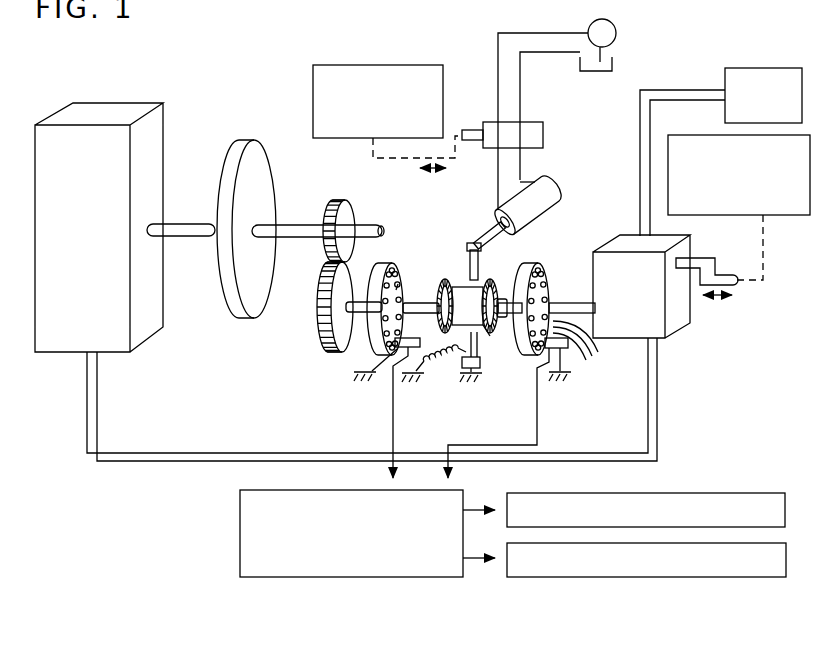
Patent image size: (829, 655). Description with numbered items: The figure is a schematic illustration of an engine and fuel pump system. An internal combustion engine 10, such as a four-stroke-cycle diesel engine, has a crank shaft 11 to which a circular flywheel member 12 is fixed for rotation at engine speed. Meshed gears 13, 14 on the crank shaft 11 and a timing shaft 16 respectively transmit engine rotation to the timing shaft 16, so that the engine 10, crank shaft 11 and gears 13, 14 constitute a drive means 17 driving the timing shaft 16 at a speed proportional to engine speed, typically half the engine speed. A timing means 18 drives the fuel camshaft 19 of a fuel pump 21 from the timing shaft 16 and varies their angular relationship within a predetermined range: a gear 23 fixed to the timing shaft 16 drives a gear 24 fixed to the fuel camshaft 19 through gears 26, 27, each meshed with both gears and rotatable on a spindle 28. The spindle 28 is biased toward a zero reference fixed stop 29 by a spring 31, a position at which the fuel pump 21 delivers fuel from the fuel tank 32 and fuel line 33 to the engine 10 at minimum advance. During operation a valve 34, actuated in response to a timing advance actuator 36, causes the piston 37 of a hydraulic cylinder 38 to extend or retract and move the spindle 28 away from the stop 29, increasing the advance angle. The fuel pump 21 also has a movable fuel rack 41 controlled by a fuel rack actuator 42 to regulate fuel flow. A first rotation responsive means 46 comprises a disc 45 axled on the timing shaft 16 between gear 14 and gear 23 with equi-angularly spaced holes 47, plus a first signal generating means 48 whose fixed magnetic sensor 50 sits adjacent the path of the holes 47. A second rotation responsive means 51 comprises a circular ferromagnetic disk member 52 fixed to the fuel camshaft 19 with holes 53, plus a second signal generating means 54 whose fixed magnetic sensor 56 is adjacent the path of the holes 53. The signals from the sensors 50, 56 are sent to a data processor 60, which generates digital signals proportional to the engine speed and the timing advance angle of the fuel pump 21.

The internal combustion engine 10 is at (108, 100).
The crank shaft 11 is at (183, 223).
The circular flywheel member 12 is at (257, 214).
The gear 13 is at (347, 210).
The gear 14 is at (345, 273).
The timing shaft 16 is at (345, 292).
The drive means 17 is at (257, 195).
The timing means 18 is at (450, 46).
The fuel camshaft 19 is at (555, 303).
The fuel pump 21 is at (690, 320).
The gear 23 is at (456, 302).
The gear 24 is at (503, 298).
The gear 26 is at (466, 270).
The gear 27 is at (490, 336).
The spindle 28 is at (483, 355).
The zero reference fixed stop 29 is at (456, 373).
The spring 31 is at (440, 368).
The fuel tank 32 is at (725, 73).
The fuel line 33 is at (650, 117).
The valve 34 is at (543, 135).
The timing advance actuator 36 is at (367, 64).
The piston 37 is at (487, 238).
The hydraulic cylinder 38 is at (521, 209).
The movable fuel rack 41 is at (700, 260).
The fuel rack actuator 42 is at (667, 140).
The disc 45 is at (370, 330).
The first rotation responsive means 46 is at (284, 346).
The holes 47 is at (398, 283).
The first signal generating means 48 is at (357, 358).
The fixed magnetic sensor 50 is at (410, 338).
The second rotation responsive means 51 is at (594, 334).
The circular ferromagnetic disk member 52 is at (546, 349).
The holes 53 is at (587, 352).
The second signal generating means 54 is at (582, 256).
The fixed magnetic sensor 56 is at (566, 379).
The data processor 60 is at (228, 509).